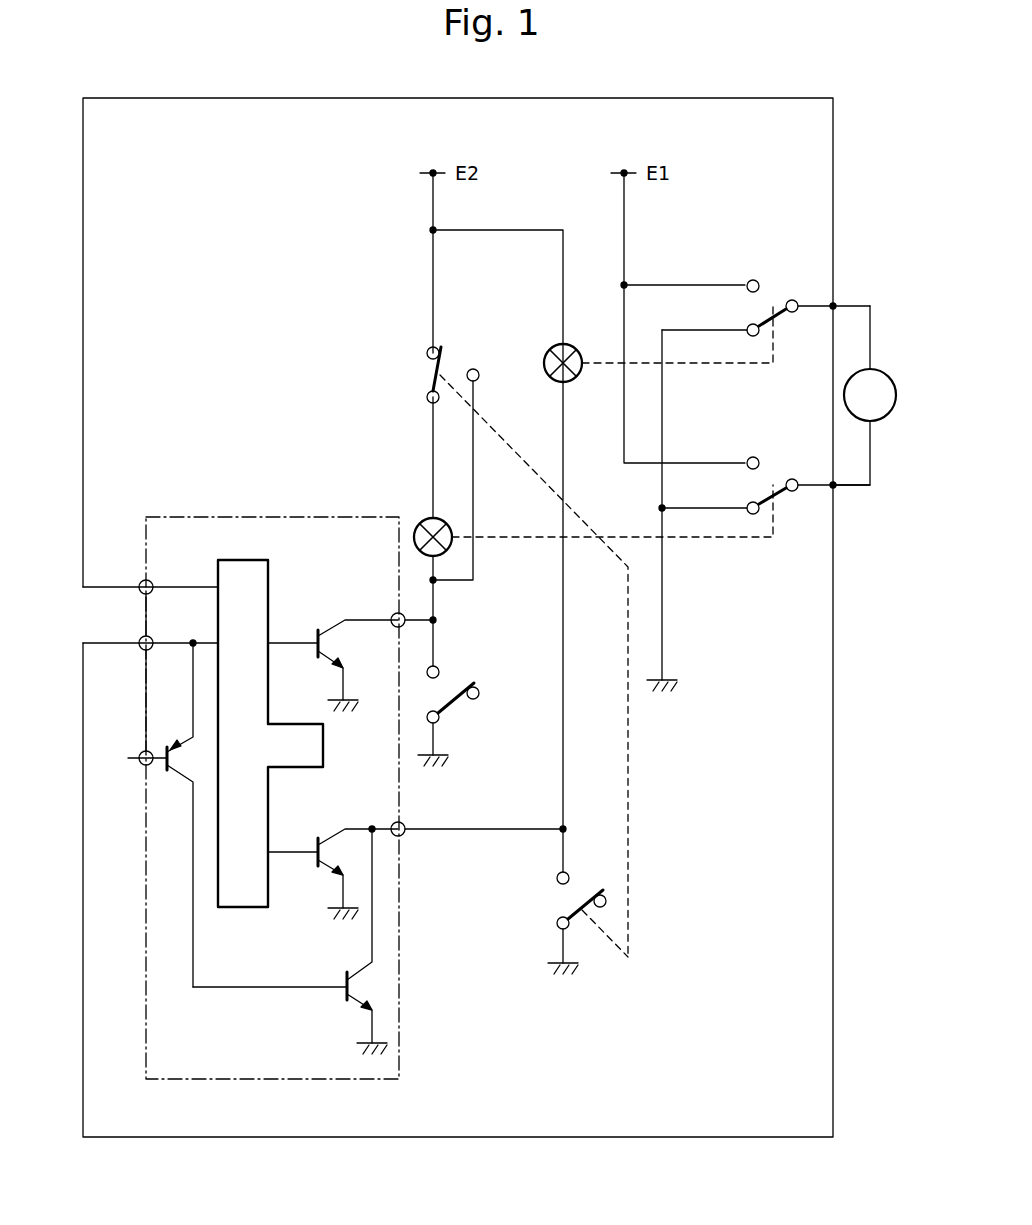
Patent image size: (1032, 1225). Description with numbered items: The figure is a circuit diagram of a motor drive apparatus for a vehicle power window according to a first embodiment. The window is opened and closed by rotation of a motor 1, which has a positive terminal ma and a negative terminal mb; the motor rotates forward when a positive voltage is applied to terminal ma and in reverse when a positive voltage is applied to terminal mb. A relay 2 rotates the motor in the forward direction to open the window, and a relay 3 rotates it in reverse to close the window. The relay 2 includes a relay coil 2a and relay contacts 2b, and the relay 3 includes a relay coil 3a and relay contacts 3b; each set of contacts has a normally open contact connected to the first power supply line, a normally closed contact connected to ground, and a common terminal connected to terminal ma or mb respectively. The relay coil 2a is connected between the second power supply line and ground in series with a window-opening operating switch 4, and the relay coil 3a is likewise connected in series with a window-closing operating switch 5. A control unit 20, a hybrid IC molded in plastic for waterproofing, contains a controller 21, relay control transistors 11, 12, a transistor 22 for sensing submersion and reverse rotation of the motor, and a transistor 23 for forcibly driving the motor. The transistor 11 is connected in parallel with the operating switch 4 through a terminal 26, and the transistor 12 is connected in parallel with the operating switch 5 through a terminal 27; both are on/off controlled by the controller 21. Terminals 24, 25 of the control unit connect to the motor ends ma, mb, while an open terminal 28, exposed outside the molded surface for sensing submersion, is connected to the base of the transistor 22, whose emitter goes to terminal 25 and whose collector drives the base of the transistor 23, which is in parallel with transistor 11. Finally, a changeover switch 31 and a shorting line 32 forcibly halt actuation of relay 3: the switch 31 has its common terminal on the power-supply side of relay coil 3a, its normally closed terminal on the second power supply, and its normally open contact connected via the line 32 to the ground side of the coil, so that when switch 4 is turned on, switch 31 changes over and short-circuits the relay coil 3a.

The motor 1 is at (897, 397).
The positive terminal ma is at (870, 368).
The negative terminal mb is at (870, 422).
The relay 2 is at (694, 305).
The relay coil 2a is at (553, 348).
The relay contacts 2b is at (775, 295).
The relay 3 is at (627, 508).
The relay coil 3a is at (427, 524).
The relay contacts 3b is at (775, 473).
The switch 31 is at (455, 362).
The shorting line 32 is at (475, 560).
The window-opening operating switch 4 is at (580, 920).
The window-closing operating switch 5 is at (457, 700).
The relay control transistor 11 is at (322, 836).
The relay control transistor 12 is at (322, 628).
The control unit 20 is at (272, 515).
The controller 21 is at (242, 558).
The transistor 22 is at (183, 736).
The transistor 23 is at (357, 1004).
The terminal 24 is at (142, 580).
The terminal 25 is at (142, 650).
The terminal 26 is at (400, 836).
The terminal 27 is at (394, 613).
The open terminal 28 is at (142, 765).